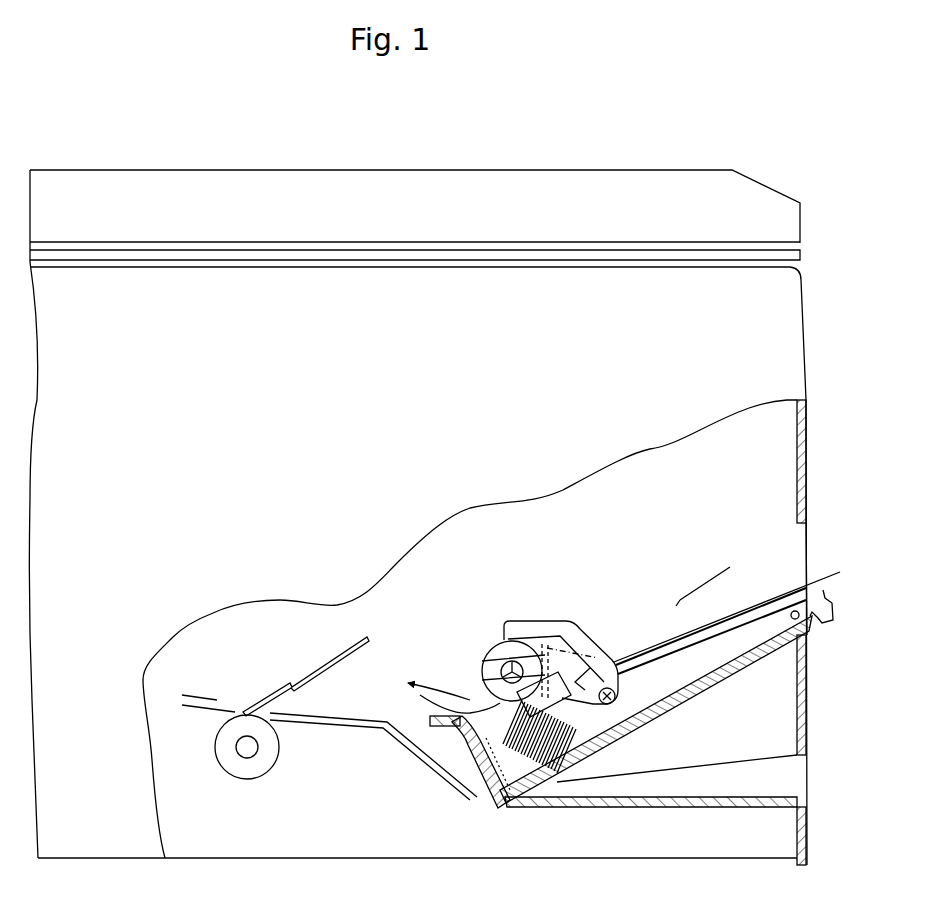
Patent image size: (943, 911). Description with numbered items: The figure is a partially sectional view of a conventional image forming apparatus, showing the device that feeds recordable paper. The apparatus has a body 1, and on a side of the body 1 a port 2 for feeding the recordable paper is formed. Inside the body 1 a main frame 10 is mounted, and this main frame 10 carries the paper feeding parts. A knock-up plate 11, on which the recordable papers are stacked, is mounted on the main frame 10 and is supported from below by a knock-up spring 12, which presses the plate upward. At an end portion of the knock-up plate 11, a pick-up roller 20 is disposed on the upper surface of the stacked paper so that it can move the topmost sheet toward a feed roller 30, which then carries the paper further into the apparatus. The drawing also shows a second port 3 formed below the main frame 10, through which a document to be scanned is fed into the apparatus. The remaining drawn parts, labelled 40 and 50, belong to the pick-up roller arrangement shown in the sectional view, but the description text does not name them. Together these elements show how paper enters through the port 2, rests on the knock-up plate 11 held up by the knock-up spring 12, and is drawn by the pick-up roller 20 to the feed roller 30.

The body 1 is at (792, 330).
The port 2 is at (793, 548).
The port 3 is at (793, 775).
The main frame 10 is at (723, 678).
The knock-up plate 11 is at (753, 627).
The knock-up spring 12 is at (585, 743).
The pick-up roller 20 is at (500, 643).
The feed roller 30 is at (263, 763).
The roller unit 40 is at (472, 663).
The pickup arm 50 is at (587, 607).